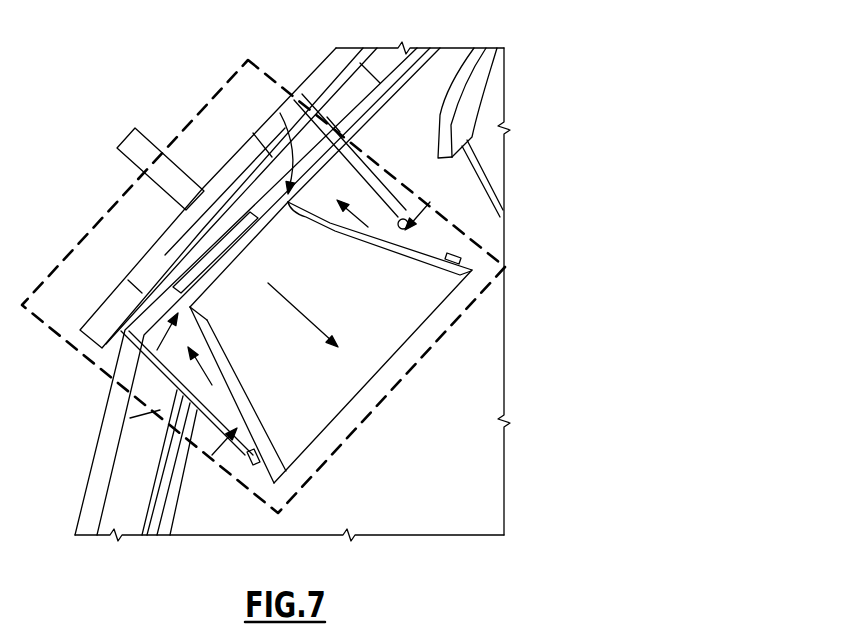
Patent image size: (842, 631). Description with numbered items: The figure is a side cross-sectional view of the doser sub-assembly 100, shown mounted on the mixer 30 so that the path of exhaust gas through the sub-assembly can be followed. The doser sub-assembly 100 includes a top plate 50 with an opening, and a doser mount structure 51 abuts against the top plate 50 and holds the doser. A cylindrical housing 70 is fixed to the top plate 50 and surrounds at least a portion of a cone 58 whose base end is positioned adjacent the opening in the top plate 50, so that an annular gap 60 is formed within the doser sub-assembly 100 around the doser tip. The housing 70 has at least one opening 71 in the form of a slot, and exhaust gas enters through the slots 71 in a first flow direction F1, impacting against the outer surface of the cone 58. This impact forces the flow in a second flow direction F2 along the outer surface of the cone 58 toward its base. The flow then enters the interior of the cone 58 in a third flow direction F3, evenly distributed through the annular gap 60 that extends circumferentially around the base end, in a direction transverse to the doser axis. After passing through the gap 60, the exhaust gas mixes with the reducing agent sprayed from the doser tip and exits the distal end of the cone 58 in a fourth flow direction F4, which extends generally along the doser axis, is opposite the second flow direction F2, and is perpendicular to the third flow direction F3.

The mixer 30 is at (345, 63).
The top plate 50 is at (122, 328).
The doser mount structure 51 is at (270, 143).
The cone 58 is at (432, 311).
The annular gap 60 is at (248, 212).
The cylindrical housing 70 is at (385, 180).
The opening 71 is at (430, 242).
The doser sub-assembly 100 is at (375, 425).
The first flow direction F1 is at (222, 497).
The second flow direction F2 is at (207, 367).
The third flow direction F3 is at (96, 290).
The fourth flow direction F4 is at (300, 305).